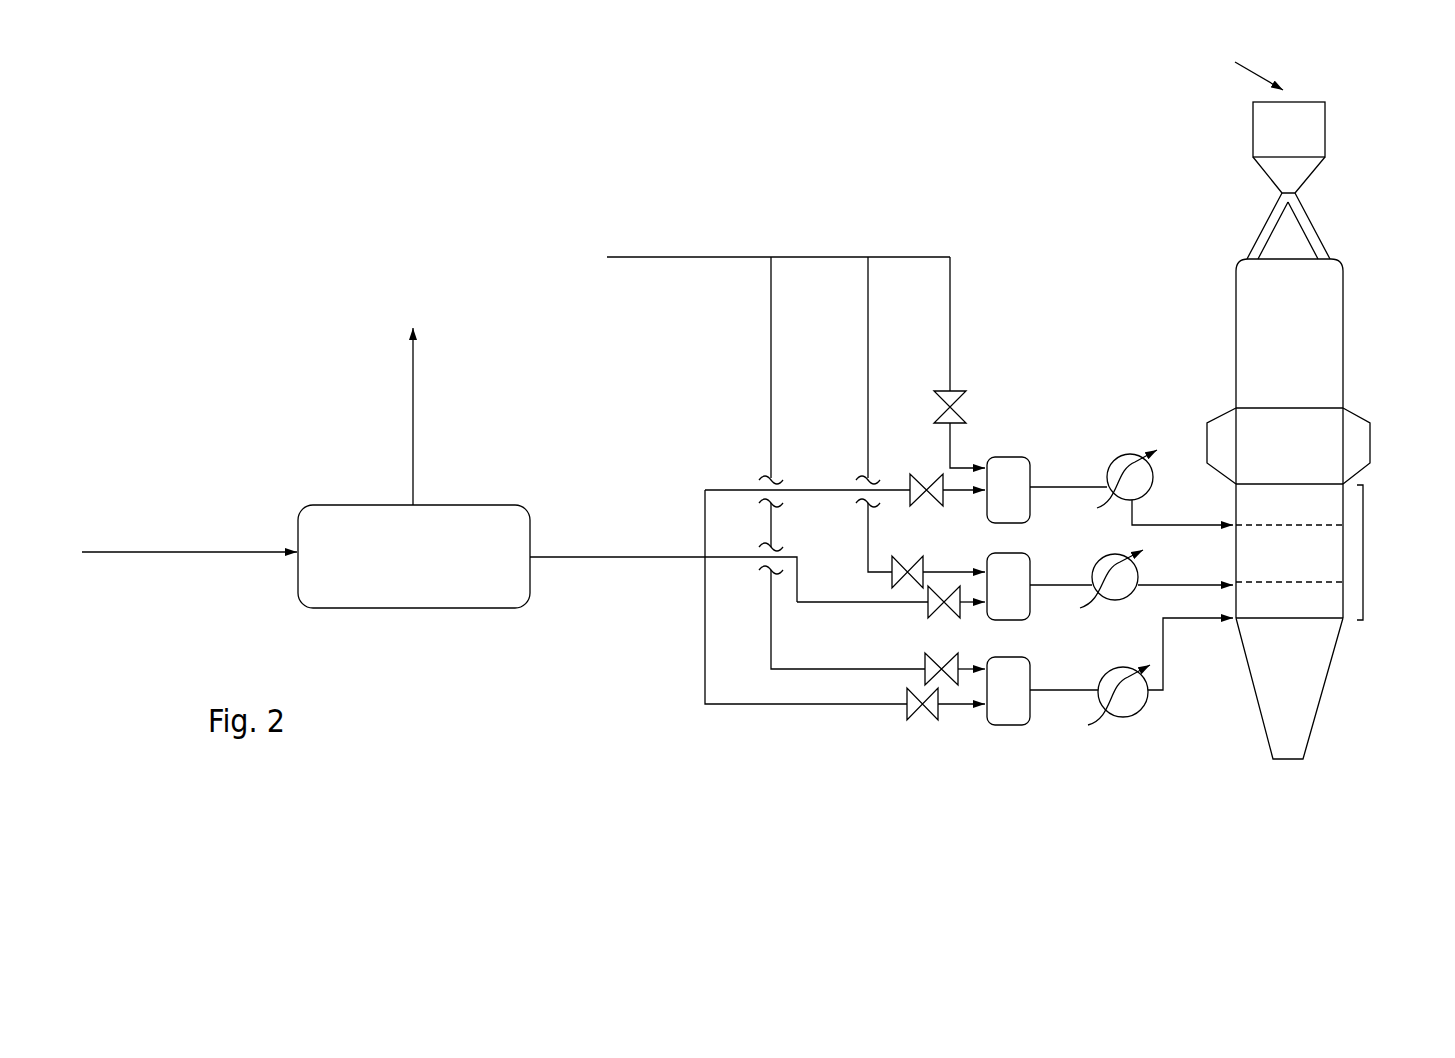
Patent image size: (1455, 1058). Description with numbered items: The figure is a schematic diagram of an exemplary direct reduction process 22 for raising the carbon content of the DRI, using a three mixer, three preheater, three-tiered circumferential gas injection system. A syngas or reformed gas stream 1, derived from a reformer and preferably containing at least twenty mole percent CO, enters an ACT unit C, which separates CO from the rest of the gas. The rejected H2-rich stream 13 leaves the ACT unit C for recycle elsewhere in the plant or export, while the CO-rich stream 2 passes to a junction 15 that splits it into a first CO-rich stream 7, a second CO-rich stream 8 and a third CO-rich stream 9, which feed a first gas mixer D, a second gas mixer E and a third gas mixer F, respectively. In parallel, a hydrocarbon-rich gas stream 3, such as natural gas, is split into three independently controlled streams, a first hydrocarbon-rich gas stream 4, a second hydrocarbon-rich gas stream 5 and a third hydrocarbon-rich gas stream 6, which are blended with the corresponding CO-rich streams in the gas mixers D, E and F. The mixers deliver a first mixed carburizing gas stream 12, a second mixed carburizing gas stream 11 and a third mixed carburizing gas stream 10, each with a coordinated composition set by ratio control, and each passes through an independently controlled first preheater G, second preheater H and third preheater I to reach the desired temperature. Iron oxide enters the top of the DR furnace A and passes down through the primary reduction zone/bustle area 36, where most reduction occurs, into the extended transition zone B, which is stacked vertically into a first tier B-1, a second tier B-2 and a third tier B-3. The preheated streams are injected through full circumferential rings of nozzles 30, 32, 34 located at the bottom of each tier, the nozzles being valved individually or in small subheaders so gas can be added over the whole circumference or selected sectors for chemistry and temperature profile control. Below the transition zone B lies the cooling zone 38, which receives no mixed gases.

The reformed gas stream 1 is at (160, 552).
The CO-rich stream 2 is at (600, 557).
The hydrocarbon-rich gas stream 3 is at (625, 257).
The first hydrocarbon-rich gas stream 4 is at (950, 372).
The second hydrocarbon-rich gas stream 5 is at (868, 350).
The third hydrocarbon-rich gas stream 6 is at (771, 408).
The first CO-rich stream 7 is at (857, 492).
The second CO-rich stream 8 is at (880, 602).
The third CO-rich stream 9 is at (800, 704).
The third mixed carburizing gas stream 10 is at (1207, 620).
The second mixed carburizing gas stream 11 is at (1143, 582).
The first mixed carburizing gas stream 12 is at (1220, 525).
The H2-rich stream 13 is at (413, 408).
The junction 15 is at (697, 567).
The process 22 is at (667, 142).
The first ring of nozzles 30 is at (1227, 505).
The second ring of nozzles 32 is at (1233, 590).
The third ring of nozzles 34 is at (1235, 622).
The primary reduction zone/bustle area 36 is at (1375, 410).
The cooling zone 38 is at (1352, 708).
The DR furnace A is at (1343, 292).
The transition zone B is at (1363, 552).
The first tier B-1 is at (1265, 507).
The second tier B-2 is at (1293, 551).
The third tier B-3 is at (1315, 601).
The ACT unit C is at (527, 507).
The first gas mixer D is at (1030, 460).
The second gas mixer E is at (1030, 556).
The third gas mixer F is at (1030, 660).
The first preheater G is at (1140, 455).
The second preheater H is at (1122, 598).
The third preheater I is at (1140, 713).